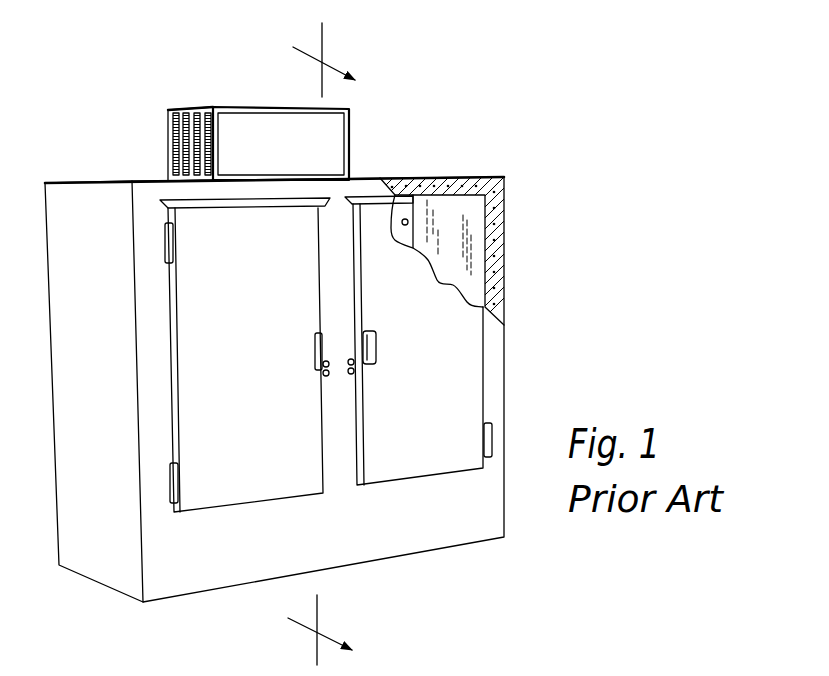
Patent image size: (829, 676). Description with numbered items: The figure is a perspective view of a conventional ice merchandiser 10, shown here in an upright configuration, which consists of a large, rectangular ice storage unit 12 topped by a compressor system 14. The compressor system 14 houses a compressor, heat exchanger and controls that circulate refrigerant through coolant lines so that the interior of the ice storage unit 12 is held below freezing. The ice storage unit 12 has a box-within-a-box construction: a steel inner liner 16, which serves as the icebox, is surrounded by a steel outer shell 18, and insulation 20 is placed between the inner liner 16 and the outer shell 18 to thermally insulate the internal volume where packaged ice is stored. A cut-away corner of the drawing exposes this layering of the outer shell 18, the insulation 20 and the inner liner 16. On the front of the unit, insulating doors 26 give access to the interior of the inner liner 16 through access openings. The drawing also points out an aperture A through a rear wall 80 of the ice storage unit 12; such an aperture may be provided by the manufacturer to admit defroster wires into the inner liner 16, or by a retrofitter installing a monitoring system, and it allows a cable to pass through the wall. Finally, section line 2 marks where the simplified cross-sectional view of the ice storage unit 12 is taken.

The ice merchandiser 10 is at (621, 116).
The ice storage unit 12 is at (523, 372).
The compressor system 14 is at (223, 98).
The inner liner 16 is at (459, 213).
The outer shell 18 is at (505, 196).
The insulation 20 is at (500, 256).
The insulating doors 26 is at (281, 433).
The rear wall 80 is at (414, 193).
The aperture A is at (405, 219).
The section line 2- 2 is at (334, 344).